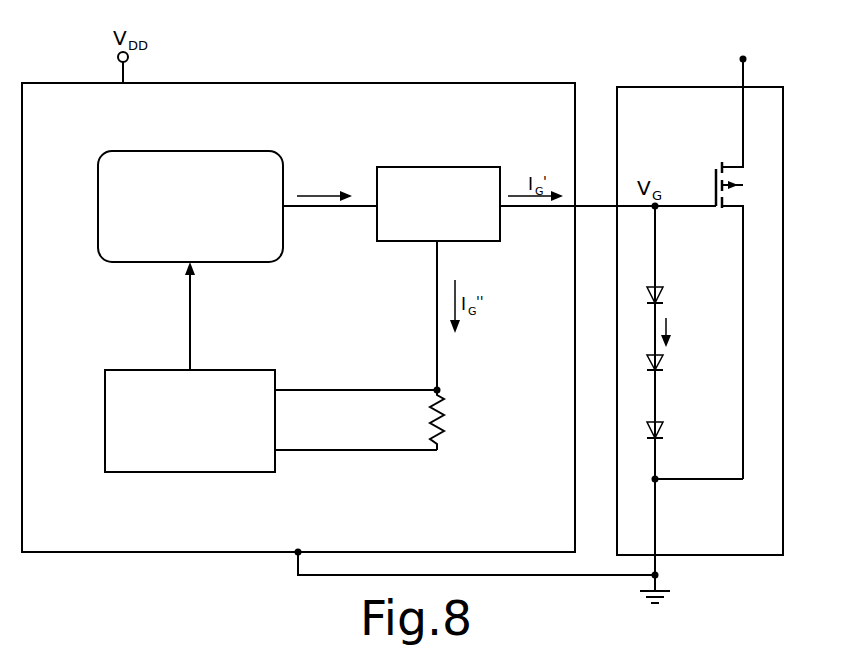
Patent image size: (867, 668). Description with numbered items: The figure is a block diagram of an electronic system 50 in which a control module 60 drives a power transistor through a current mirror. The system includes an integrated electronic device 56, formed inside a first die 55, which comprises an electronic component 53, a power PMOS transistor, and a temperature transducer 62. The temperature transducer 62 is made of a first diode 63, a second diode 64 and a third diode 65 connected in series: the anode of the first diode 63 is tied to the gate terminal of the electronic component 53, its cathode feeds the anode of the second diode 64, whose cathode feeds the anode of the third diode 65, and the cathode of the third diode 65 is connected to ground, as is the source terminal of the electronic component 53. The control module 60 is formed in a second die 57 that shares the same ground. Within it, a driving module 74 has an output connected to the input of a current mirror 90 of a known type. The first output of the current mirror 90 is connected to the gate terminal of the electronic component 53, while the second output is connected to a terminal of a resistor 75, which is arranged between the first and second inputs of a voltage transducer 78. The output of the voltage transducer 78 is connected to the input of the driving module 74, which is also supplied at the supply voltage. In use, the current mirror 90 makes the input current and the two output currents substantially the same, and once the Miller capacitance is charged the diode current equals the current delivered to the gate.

The electronic system 50 is at (786, 65).
The electronic component 53 is at (715, 178).
The first die 55 is at (778, 252).
The integrated electronic device 56 is at (645, 133).
The second die 57 is at (503, 90).
The control module 60 is at (308, 158).
The temperature transducer 62 is at (739, 390).
The first diode 63 is at (664, 292).
The second diode 64 is at (663, 365).
The third diode 65 is at (664, 430).
The driving module 74 is at (107, 197).
The resistor 75 is at (447, 418).
The voltage transducer 78 is at (210, 462).
The current mirror 90 is at (400, 168).